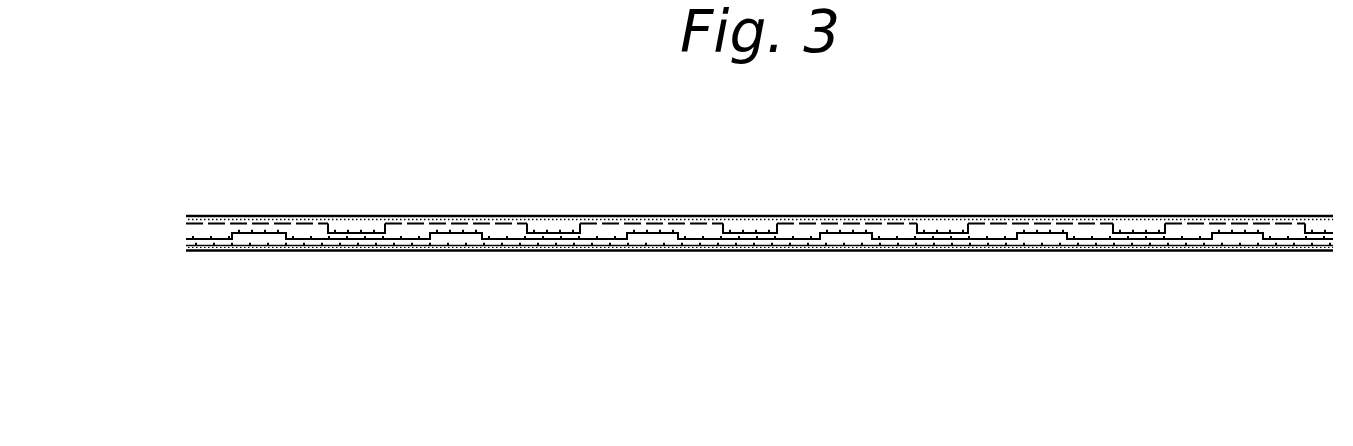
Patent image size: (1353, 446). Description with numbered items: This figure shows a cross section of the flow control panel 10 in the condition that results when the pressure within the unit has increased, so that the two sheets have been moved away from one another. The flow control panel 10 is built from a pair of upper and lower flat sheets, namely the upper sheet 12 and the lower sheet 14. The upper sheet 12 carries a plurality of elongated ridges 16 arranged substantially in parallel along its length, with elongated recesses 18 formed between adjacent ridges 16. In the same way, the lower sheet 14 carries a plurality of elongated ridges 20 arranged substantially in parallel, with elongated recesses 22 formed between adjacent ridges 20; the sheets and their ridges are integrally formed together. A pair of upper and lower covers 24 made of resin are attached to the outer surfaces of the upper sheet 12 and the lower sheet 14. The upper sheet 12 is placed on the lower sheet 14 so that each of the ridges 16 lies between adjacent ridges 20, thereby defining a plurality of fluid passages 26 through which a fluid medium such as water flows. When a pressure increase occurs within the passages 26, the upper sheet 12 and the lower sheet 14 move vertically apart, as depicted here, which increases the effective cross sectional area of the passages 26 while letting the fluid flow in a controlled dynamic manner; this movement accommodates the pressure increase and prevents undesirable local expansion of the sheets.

The flow control panel 10 is at (1079, 183).
The upper sheet 12 is at (950, 216).
The lower sheet 14 is at (401, 247).
The ridges 16 is at (565, 223).
The recesses 18 is at (701, 233).
The ridges 20 is at (842, 245).
The recesses 22 is at (540, 239).
The covers 24 is at (820, 216).
The fluid passages 26 is at (603, 236).